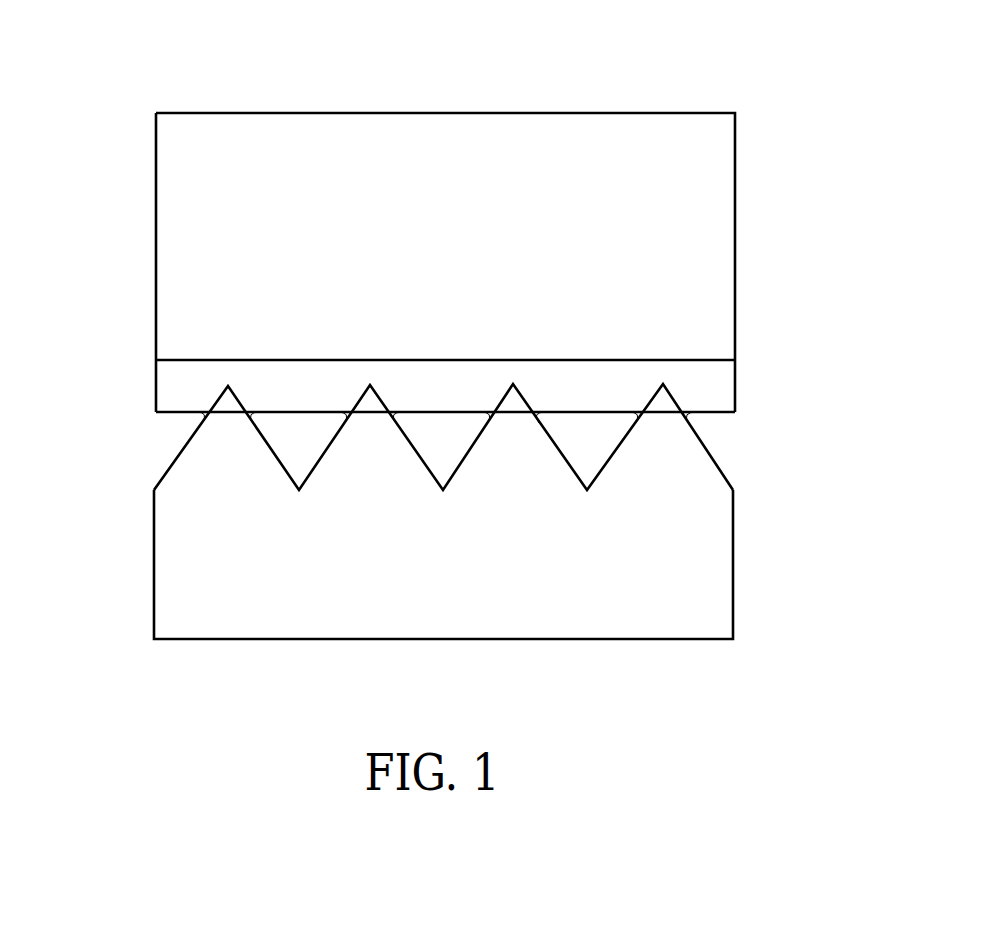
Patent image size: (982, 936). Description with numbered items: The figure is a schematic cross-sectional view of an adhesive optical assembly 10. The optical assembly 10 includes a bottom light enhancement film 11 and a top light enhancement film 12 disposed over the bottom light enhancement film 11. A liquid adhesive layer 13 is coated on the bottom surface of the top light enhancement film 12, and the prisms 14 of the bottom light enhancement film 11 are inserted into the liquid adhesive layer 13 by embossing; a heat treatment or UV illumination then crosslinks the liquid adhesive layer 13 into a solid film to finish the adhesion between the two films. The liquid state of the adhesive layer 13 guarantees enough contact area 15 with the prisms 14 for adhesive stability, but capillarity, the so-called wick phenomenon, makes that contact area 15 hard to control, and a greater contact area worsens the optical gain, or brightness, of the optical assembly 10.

The adhesive optical assembly 10 is at (827, 34).
The bottom light enhancement film 11 is at (703, 588).
The top light enhancement film 12 is at (690, 264).
The liquid adhesive layer 13 is at (737, 385).
The protrusions 14 is at (722, 462).
The fillet / adhesive portion 15 is at (197, 422).